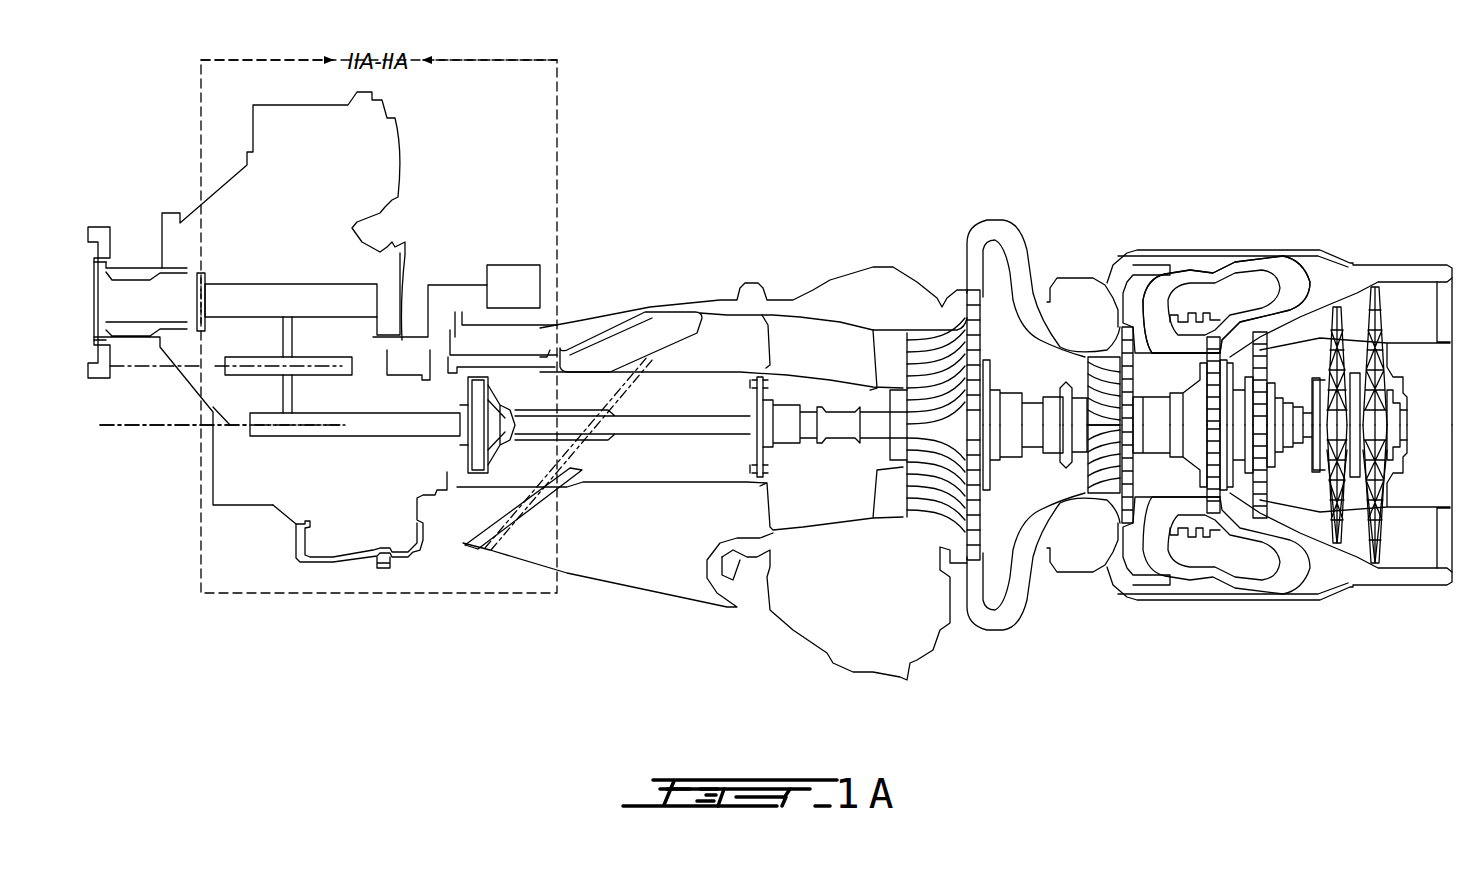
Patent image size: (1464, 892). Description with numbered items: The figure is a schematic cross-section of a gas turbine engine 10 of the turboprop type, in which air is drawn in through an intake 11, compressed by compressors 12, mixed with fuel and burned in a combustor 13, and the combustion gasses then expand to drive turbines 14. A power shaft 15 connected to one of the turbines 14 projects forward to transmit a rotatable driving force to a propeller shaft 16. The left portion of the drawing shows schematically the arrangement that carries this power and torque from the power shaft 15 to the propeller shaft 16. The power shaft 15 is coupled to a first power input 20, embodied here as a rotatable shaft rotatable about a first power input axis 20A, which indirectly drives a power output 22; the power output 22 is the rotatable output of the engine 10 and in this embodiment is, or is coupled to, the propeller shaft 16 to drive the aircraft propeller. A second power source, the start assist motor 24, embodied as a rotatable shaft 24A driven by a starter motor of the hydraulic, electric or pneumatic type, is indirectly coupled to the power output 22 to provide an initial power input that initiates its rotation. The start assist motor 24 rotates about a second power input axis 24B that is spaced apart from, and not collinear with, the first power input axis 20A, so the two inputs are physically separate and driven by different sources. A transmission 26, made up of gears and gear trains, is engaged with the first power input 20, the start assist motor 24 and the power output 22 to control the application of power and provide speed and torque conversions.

The gas turbine engine 10 is at (683, 178).
The intake 11 is at (637, 553).
The compressors 12 is at (1107, 503).
The combustor 13 is at (1237, 288).
The turbines 14 is at (1200, 505).
The power shaft 15 is at (662, 423).
The propeller shaft 16 is at (138, 293).
The first power input 20 is at (383, 447).
The first power input axis 20A is at (172, 427).
The power output 22 is at (363, 273).
The start assist motor 24 is at (520, 253).
The rotatable shaft 24A is at (327, 377).
The second power input axis 24B is at (150, 365).
The transmission 26 is at (268, 335).